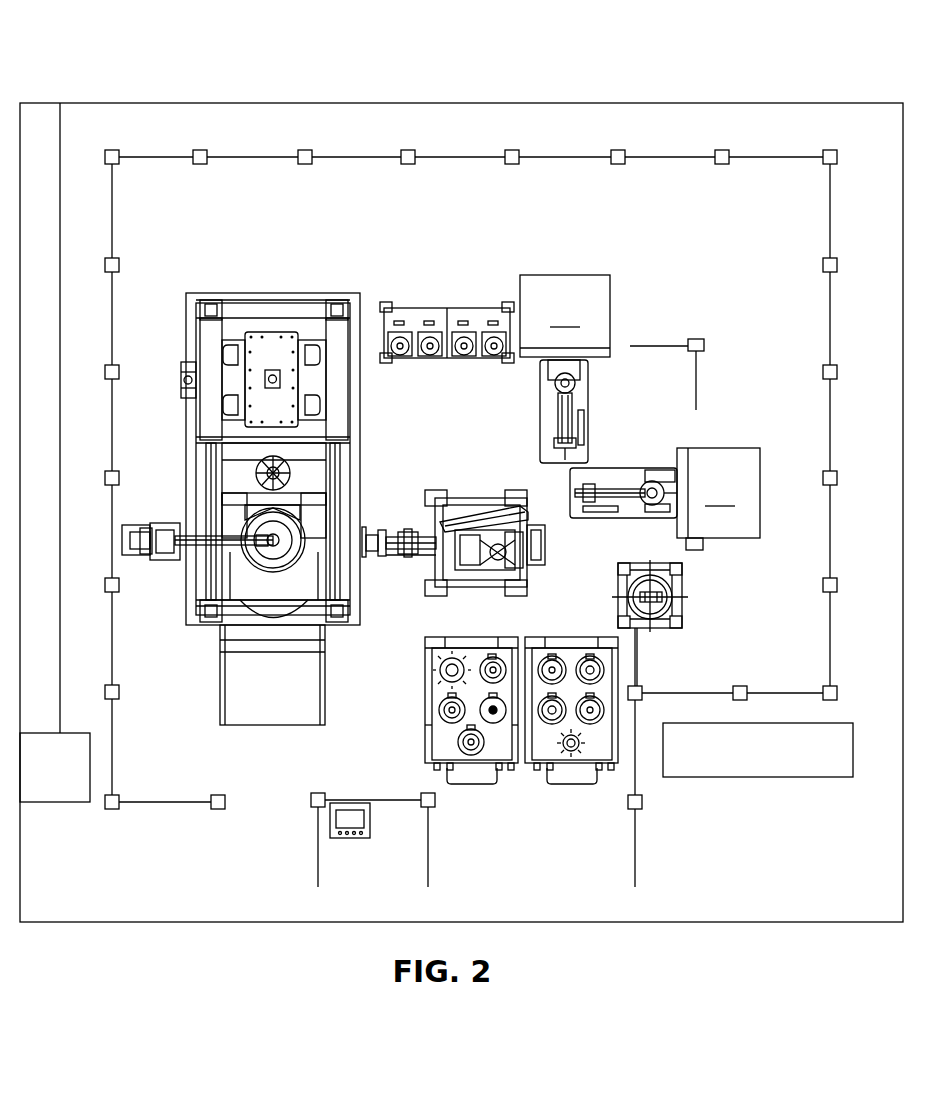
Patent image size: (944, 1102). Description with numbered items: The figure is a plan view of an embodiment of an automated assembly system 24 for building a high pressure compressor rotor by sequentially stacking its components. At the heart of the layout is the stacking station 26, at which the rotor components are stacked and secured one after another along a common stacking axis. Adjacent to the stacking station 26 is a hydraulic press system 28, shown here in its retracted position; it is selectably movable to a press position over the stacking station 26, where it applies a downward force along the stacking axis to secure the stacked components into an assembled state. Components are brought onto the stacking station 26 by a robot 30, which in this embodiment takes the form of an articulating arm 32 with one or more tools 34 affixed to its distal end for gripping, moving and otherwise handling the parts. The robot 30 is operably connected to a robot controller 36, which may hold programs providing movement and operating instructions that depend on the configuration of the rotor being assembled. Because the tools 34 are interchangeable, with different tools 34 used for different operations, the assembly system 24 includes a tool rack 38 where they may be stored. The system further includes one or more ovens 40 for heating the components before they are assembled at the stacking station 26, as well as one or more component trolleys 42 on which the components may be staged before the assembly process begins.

The assembly system 24 is at (94, 44).
The stacking station 26 is at (258, 567).
The hydraulic press system 28 is at (330, 335).
The robot 30 is at (500, 512).
The articulating arm 32 is at (413, 558).
The tools 34 is at (372, 530).
The robot controller 36 is at (818, 778).
The tool rack 38 is at (466, 315).
The ovens 40 is at (640, 480).
The component trolleys 42 is at (570, 748).